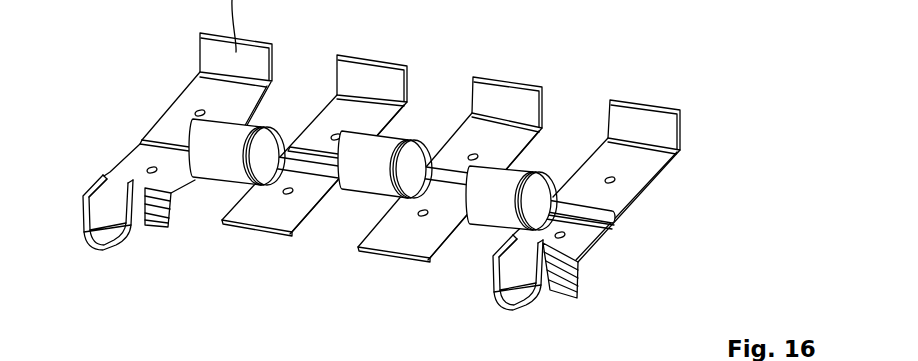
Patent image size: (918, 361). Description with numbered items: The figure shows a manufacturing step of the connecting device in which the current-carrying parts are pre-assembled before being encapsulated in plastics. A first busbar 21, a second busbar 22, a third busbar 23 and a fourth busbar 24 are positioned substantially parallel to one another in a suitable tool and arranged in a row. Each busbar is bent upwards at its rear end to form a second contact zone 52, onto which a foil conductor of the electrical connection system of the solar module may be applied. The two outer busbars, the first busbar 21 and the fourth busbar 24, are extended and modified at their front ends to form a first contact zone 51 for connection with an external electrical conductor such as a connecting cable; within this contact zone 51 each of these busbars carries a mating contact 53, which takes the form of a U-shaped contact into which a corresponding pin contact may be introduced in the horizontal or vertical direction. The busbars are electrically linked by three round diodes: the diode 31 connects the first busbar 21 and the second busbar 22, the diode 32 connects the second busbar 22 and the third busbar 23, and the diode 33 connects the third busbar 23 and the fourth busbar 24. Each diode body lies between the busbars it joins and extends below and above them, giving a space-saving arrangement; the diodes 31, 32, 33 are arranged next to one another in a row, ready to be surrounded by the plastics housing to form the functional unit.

The first busbar 21 is at (200, 97).
The second busbar 22 is at (280, 213).
The third busbar 23 is at (407, 233).
The fourth busbar 24 is at (642, 158).
The diode 31 is at (249, 130).
The diode 32 is at (390, 140).
The diode 33 is at (517, 172).
The first contact zone 51 is at (158, 228).
The second contact zone 52 is at (645, 118).
The mating contact 53 is at (83, 226).